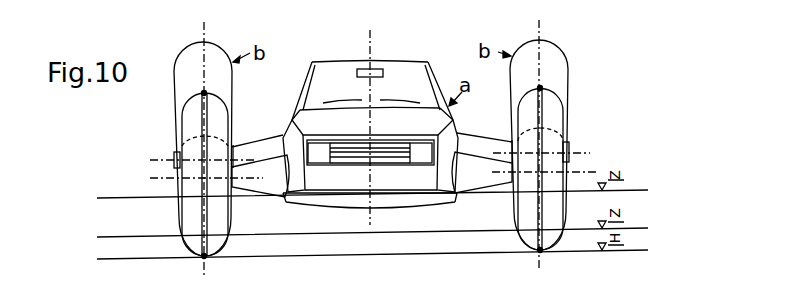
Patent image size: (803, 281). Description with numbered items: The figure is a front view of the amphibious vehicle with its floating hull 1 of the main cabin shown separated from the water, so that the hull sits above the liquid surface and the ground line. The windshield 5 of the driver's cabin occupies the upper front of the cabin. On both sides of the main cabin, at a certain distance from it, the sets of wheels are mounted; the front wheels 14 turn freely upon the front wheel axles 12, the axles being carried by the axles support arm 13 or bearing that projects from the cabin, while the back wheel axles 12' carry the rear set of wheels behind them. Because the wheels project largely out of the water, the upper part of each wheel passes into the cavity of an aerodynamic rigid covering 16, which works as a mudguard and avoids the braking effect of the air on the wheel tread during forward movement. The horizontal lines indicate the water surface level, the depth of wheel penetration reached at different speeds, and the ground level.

The floating hull of the main cabin 1 is at (313, 123).
The windshield in driver's cabin 5 is at (335, 78).
The front wheel axles 12 is at (372, 188).
The back wheel axles 12' is at (372, 134).
The axles support arm 13 is at (569, 148).
The front wheels 14 is at (193, 128).
The aerodynamic rigid covering of wheels 16 is at (557, 73).